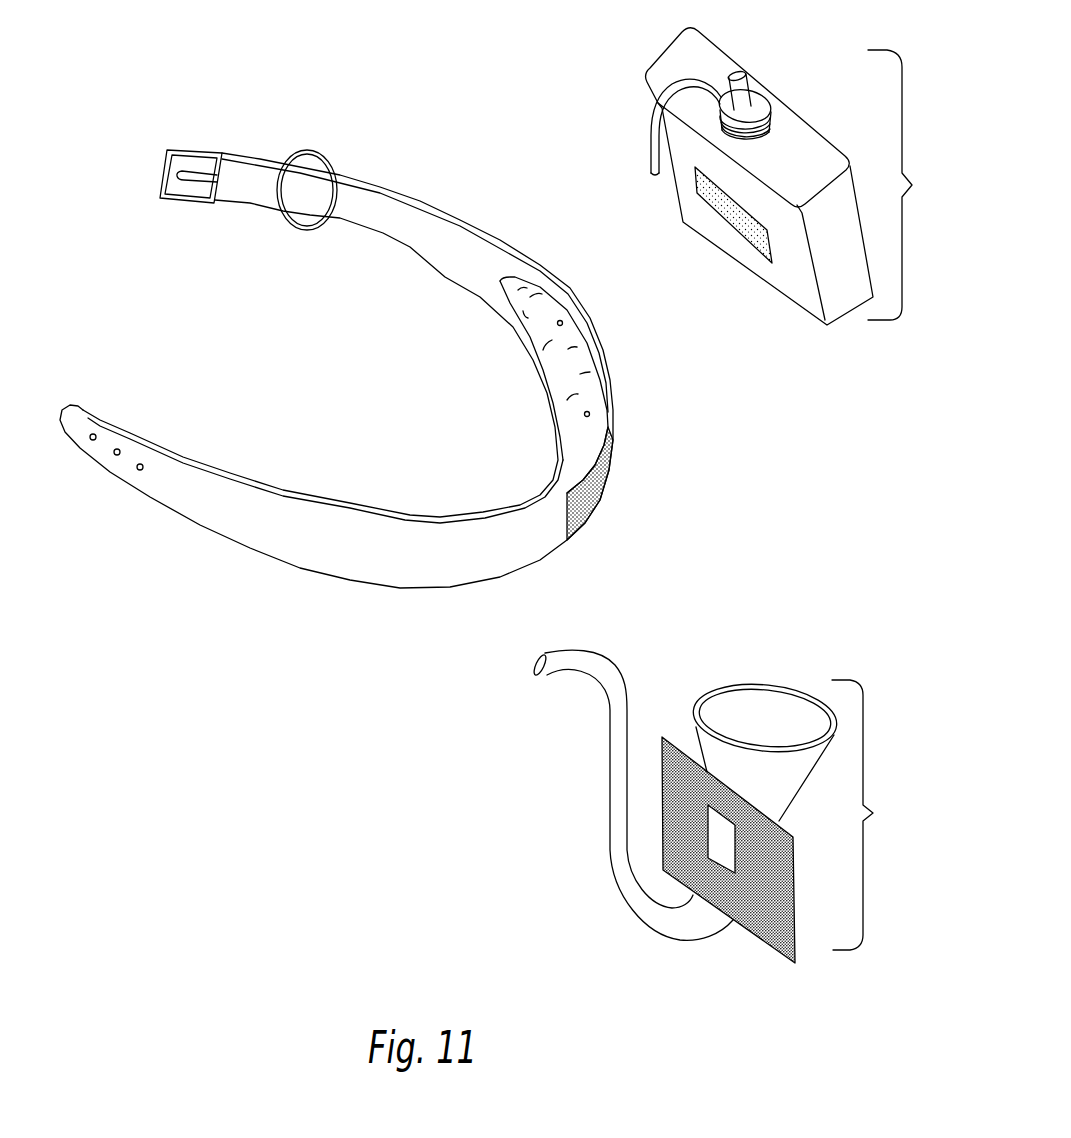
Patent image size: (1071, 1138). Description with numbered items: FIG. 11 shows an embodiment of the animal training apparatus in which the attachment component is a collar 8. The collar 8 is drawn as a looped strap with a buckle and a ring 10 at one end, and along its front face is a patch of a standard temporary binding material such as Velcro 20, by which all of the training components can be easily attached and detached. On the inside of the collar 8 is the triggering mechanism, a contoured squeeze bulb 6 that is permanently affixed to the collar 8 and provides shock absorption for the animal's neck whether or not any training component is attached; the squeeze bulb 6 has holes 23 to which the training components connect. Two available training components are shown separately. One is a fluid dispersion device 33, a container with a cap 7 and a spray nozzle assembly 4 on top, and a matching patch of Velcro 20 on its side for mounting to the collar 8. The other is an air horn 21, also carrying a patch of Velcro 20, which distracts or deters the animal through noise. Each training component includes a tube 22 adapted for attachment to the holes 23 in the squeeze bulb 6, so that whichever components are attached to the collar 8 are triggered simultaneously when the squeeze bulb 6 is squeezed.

The spray nozzle assembly 4 is at (742, 90).
The squeeze bulb 6 is at (550, 366).
The cap 7 is at (767, 110).
The collar 8 is at (288, 547).
The ring 10 is at (331, 165).
The Velcro 20 is at (600, 497).
The air horn 21 is at (798, 814).
The tube 22 is at (657, 157).
The holes 23 is at (560, 323).
The fluid dispersion device 33 is at (793, 176).